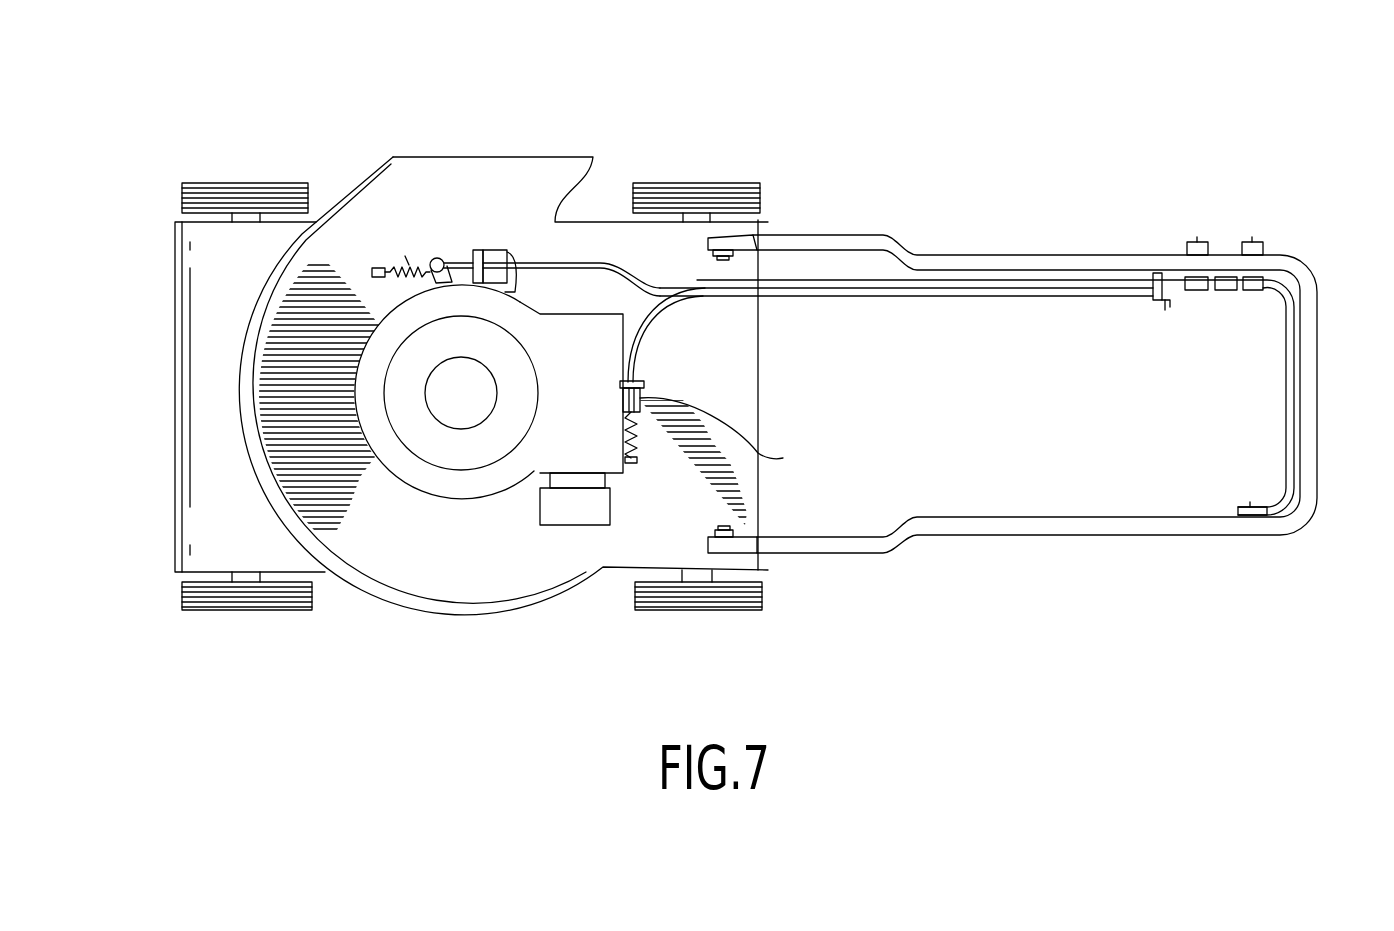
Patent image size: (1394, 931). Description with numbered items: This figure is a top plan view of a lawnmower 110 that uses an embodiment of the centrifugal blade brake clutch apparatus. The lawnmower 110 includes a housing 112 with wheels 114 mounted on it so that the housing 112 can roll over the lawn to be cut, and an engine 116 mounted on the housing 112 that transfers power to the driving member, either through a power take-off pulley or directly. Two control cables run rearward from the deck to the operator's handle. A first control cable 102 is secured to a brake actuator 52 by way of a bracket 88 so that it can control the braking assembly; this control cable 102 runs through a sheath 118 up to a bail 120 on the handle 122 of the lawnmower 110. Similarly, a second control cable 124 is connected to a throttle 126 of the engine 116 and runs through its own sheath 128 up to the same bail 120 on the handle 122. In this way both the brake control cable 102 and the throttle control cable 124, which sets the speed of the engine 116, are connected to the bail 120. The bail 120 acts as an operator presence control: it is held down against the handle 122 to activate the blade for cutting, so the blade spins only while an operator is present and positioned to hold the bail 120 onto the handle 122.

The lawnmower 110 is at (292, 103).
The housing 112 is at (213, 453).
The wheels 114 is at (183, 196).
The engine 116 is at (357, 395).
The sheath 118 is at (573, 262).
The bail 120 is at (1290, 397).
The handle 122 is at (1309, 392).
The control cable 124 is at (783, 458).
The throttle 126 is at (640, 413).
The sheath 128 is at (688, 300).
The brake actuator 52 is at (441, 257).
The bracket 88 is at (493, 248).
The control cable 102 is at (458, 262).